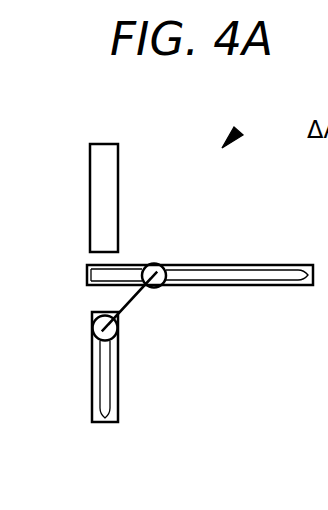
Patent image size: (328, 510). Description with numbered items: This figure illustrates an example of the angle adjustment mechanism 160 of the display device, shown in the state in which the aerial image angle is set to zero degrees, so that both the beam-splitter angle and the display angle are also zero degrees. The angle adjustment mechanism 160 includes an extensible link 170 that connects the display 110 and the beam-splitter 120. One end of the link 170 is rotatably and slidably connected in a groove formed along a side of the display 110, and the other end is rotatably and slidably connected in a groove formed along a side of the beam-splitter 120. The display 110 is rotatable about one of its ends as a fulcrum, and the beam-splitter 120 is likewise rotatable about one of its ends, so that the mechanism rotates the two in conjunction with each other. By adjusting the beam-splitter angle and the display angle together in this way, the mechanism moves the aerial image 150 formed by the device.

The display 110 is at (118, 418).
The beam-splitter 120 is at (293, 265).
The aerial image 150 is at (105, 144).
The angle adjustment mechanism 160 is at (236, 124).
The extensible link 170 is at (143, 308).